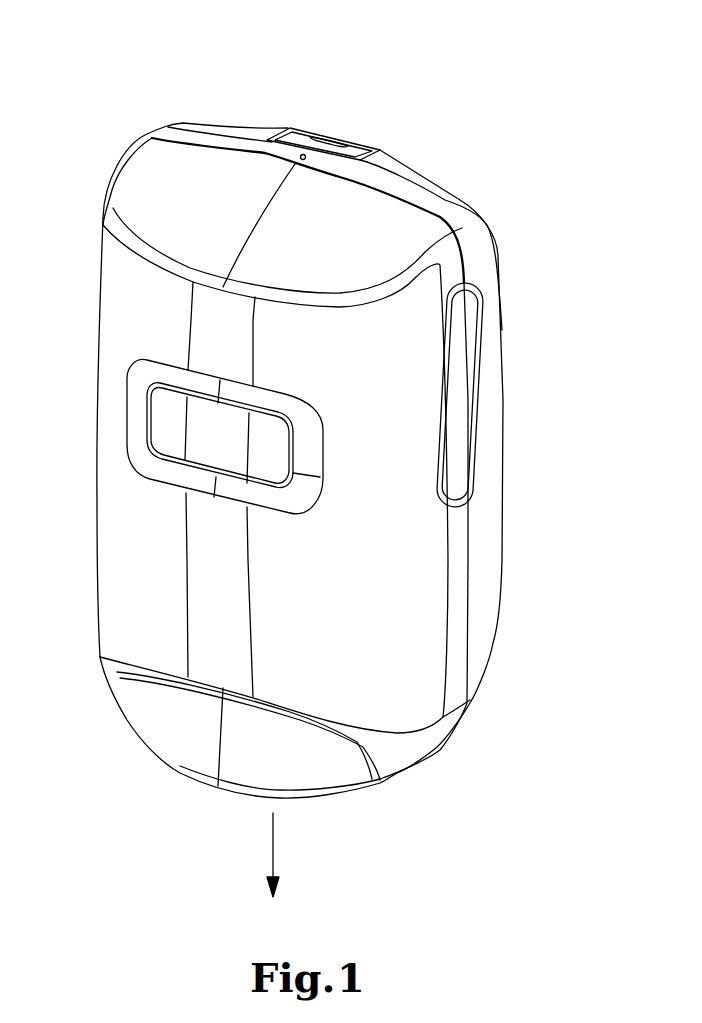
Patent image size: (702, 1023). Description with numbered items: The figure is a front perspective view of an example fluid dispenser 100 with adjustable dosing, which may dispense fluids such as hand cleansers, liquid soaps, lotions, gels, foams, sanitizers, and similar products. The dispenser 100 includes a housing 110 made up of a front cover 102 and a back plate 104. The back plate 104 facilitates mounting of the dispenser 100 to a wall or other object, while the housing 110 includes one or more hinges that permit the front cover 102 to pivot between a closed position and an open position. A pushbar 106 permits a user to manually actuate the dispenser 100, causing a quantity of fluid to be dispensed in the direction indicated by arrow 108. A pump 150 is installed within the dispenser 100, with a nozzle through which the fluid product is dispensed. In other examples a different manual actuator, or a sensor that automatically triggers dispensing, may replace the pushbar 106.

The fluid dispenser 100 is at (505, 85).
The front cover 102 is at (108, 183).
The back plate 104 is at (483, 212).
The pushbar 106 is at (303, 153).
The arrow 108 is at (273, 843).
The housing 110 is at (493, 548).
The pump 150 is at (357, 150).